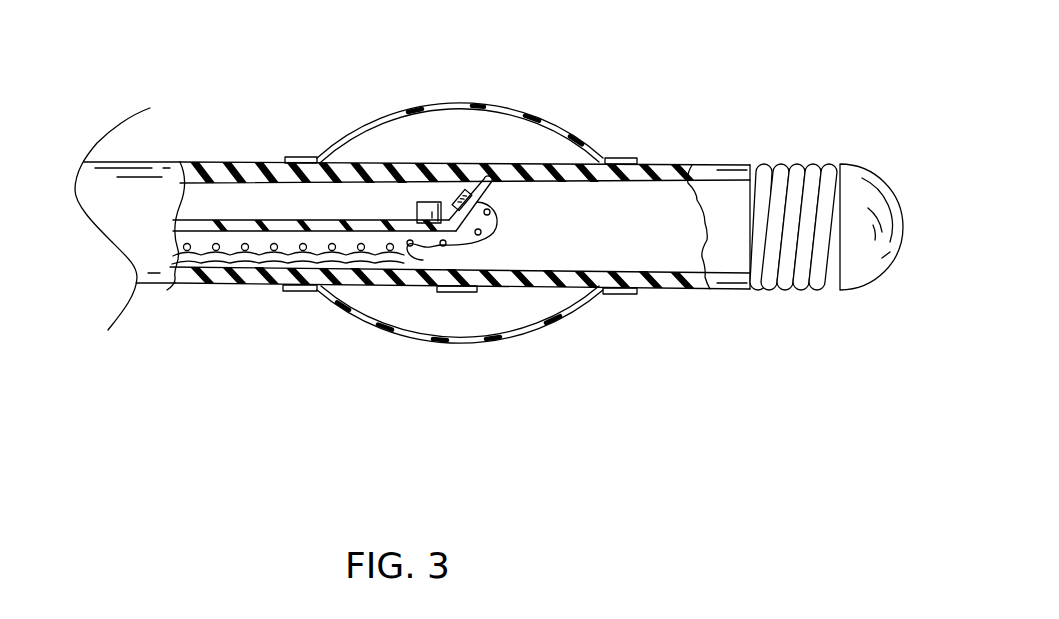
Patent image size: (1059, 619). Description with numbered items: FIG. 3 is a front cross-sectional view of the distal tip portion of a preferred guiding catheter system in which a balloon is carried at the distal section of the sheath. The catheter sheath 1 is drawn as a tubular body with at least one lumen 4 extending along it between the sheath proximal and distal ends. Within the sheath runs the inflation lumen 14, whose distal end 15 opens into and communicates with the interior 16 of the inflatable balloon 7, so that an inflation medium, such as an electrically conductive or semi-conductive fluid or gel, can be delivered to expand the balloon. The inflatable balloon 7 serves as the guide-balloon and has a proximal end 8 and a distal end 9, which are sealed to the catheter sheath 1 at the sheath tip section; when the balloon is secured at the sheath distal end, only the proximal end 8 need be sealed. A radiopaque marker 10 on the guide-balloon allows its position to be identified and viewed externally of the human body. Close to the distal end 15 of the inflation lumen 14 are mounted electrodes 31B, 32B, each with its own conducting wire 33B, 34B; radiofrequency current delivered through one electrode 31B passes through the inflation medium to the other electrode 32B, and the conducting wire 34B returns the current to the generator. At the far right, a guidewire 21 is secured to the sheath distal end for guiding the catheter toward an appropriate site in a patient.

The catheter sheath 1 is at (165, 162).
The lumen 4 is at (655, 257).
The inflatable balloon 7 is at (512, 105).
The proximal end of the inflatable balloon 8 is at (303, 156).
The distal end of the inflatable balloon 9 is at (620, 156).
The radiopaque marker 10 is at (443, 297).
The inflation lumen 14 is at (288, 213).
The distal end of the inflation lumen 15 is at (431, 200).
The interior of the inflatable balloon 16 is at (557, 148).
The guidewire 21 is at (865, 167).
The electrode 31B is at (437, 215).
The electrode 32B is at (472, 182).
The conducting wire 33B is at (167, 290).
The conducting wire 34B is at (270, 286).